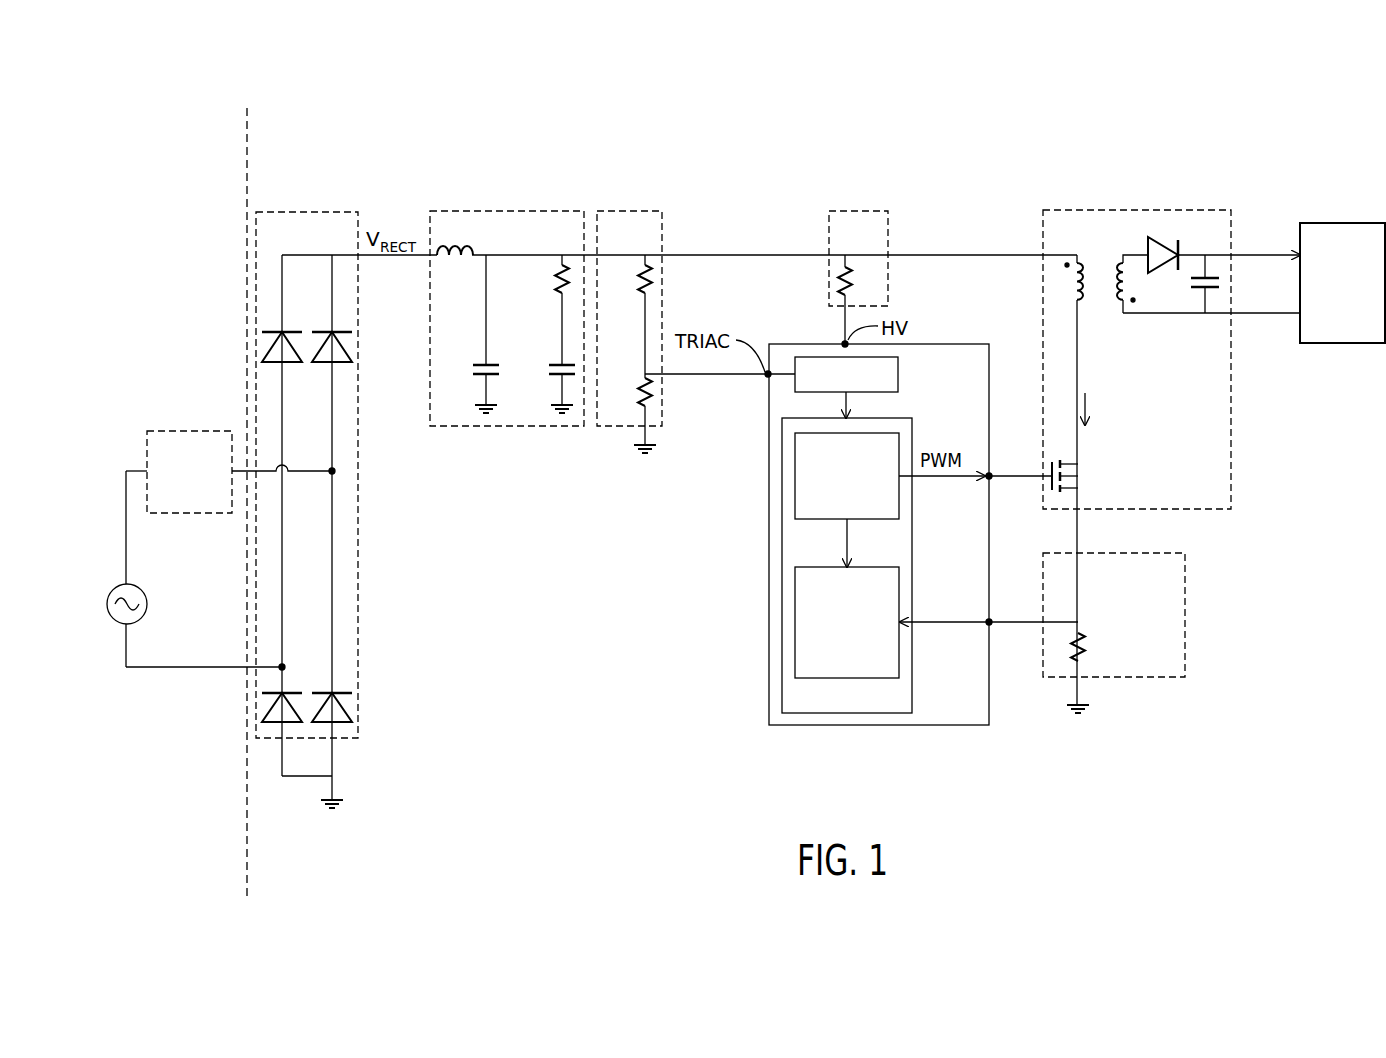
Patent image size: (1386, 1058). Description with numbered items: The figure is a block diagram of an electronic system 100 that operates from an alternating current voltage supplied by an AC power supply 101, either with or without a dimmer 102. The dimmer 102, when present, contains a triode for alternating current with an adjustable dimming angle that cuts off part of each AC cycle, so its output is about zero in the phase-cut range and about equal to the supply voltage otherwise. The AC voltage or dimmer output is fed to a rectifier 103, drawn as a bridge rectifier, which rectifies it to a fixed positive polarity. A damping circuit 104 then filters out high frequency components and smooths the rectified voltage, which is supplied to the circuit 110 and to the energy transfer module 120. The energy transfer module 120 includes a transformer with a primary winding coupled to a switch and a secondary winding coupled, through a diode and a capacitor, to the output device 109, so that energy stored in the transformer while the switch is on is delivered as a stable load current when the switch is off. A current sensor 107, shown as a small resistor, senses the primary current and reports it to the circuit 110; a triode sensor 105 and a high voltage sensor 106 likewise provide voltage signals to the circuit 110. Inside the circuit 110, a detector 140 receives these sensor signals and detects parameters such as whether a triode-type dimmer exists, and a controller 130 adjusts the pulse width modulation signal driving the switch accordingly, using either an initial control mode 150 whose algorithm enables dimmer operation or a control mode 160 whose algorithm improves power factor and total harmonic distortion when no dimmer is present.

The electronic system 100 is at (1262, 91).
The AC power supply 101 is at (141, 618).
The dimmer 102 is at (200, 430).
The rectifier 103 is at (306, 210).
The damping circuit 104 is at (515, 210).
The TRIAC sensor 105 is at (638, 210).
The high voltage sensor 106 is at (866, 210).
The current sensor 107 is at (1158, 552).
The output device 109 is at (1355, 222).
The circuit 110 is at (962, 340).
The energy transfer module 120 is at (1115, 210).
The controller 130 is at (912, 663).
The detector 140 is at (899, 368).
The initial control mode 150 is at (899, 440).
The control mode 160 is at (899, 580).